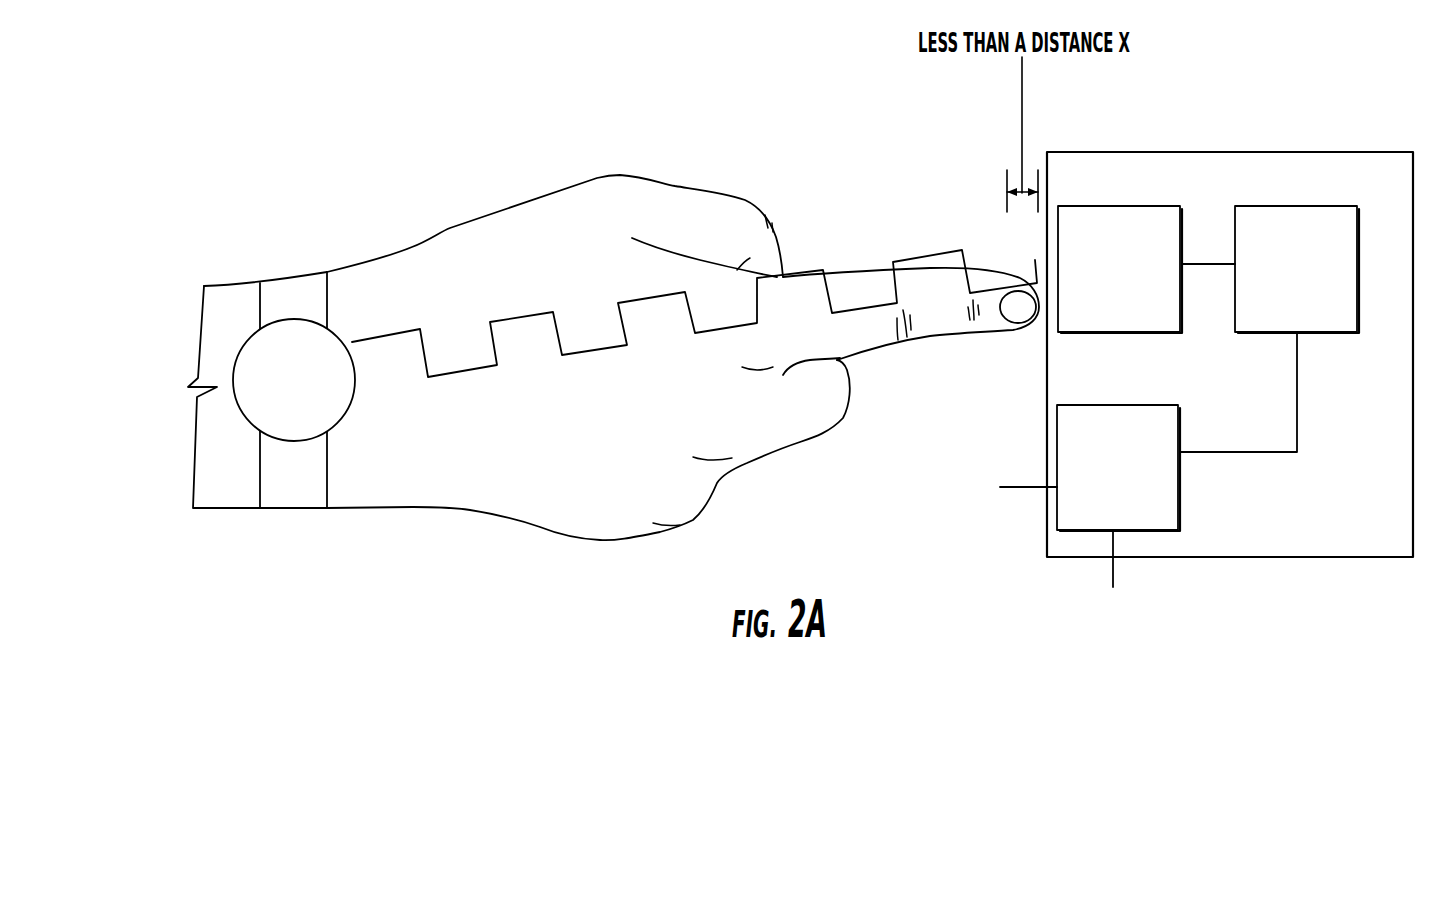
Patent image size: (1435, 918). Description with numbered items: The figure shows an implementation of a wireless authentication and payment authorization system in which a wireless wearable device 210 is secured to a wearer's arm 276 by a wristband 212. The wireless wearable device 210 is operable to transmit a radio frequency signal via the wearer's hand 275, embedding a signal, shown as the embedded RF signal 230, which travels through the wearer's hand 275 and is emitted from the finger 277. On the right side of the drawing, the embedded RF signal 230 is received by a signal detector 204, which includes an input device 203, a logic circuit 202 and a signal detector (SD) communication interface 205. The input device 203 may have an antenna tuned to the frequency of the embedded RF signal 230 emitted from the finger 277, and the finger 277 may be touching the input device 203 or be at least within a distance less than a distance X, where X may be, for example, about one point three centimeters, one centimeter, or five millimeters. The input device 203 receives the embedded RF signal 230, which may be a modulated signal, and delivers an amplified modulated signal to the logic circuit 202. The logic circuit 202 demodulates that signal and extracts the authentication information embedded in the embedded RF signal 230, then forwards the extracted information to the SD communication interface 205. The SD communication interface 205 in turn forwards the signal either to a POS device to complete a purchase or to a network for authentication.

The wearer's arm 276 is at (285, 161).
The wristband 212 is at (397, 214).
The wireless wearable device 210 is at (340, 422).
The wearer's hand 275 is at (547, 139).
The finger 277 is at (1018, 417).
The embedded RF signal 230 is at (958, 236).
The signal detector 204 is at (1327, 184).
The input device 203 is at (1137, 312).
The logic circuit 202 is at (1313, 312).
The signal detector (SD) communication interface 205 is at (1135, 510).